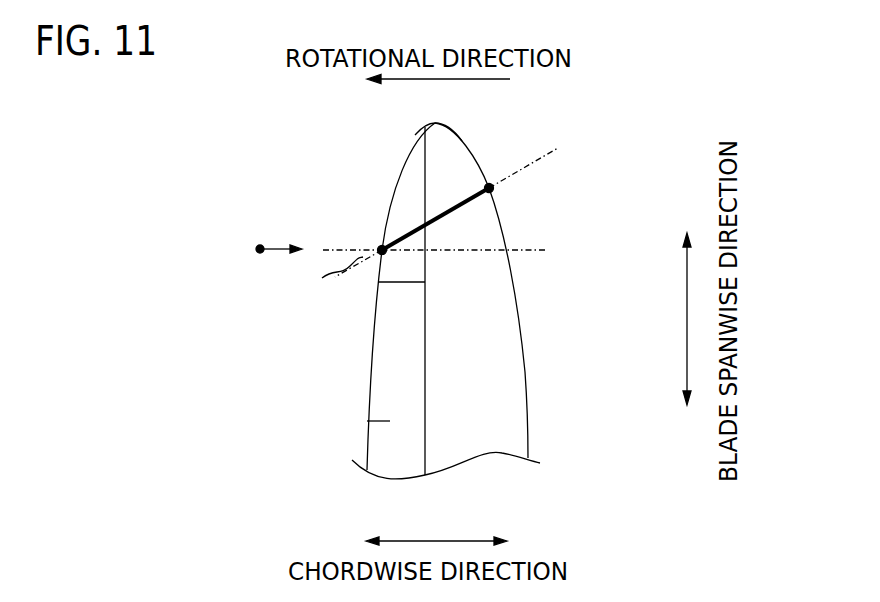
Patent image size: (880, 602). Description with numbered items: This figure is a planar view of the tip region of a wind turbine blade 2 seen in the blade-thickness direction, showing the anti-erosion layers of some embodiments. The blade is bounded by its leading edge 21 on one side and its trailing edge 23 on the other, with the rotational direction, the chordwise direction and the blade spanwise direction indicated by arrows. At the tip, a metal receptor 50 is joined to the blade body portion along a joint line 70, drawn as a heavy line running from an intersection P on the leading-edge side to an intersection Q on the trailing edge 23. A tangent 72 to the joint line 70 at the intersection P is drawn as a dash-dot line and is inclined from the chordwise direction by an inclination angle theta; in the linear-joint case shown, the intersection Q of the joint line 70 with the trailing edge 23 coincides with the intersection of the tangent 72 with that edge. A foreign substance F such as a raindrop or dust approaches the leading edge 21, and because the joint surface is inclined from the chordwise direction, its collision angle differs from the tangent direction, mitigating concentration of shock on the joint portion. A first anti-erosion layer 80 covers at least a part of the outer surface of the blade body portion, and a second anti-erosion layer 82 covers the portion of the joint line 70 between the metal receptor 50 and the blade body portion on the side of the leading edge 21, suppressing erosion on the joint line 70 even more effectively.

The wind turbine blade 2 is at (600, 76).
The leading edge 21 is at (370, 368).
The trailing edge 23 is at (525, 372).
The metal receptor 50 is at (445, 133).
The joint line 70 is at (460, 207).
The tangent 72 is at (517, 170).
The first anti-erosion layer 80 is at (367, 421).
The second anti-erosion layer 82 is at (412, 162).
The intersection P is at (382, 250).
The intersection Q is at (492, 189).
The foreign substance F is at (260, 254).